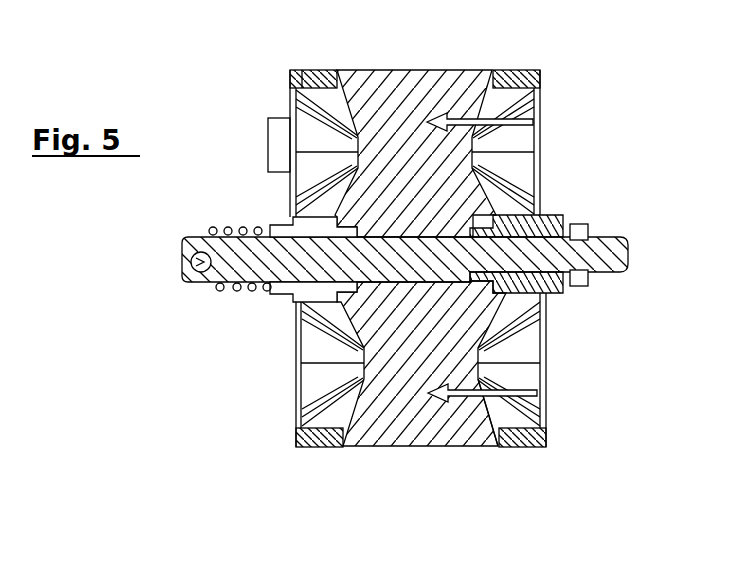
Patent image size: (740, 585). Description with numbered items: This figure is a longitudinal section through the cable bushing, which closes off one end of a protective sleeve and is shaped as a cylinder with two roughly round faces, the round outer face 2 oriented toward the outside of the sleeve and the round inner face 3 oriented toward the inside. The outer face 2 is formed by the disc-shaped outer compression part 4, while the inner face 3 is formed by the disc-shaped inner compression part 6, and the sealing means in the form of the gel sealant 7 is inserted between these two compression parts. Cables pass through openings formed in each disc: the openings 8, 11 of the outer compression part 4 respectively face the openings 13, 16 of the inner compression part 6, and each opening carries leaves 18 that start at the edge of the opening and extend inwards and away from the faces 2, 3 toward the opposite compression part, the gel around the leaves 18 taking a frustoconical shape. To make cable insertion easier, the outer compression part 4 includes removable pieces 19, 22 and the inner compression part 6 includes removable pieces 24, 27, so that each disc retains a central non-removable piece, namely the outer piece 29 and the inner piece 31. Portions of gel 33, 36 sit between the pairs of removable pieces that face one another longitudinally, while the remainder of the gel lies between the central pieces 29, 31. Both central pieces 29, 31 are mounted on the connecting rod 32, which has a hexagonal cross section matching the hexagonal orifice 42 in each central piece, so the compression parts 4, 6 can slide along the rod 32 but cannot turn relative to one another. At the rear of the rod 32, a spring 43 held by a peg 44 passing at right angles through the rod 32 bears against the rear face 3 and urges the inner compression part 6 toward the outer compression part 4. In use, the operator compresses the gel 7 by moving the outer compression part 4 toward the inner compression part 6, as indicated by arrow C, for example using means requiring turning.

The round outer face 2 is at (547, 415).
The round inner face 3 is at (300, 425).
The outer compression part 4 is at (514, 78).
The inner compression part 6 is at (302, 78).
The gel sealant 7 is at (410, 350).
The opening 8 is at (505, 352).
The opening 11 is at (523, 142).
The opening 13 is at (312, 380).
The opening 16 is at (287, 143).
The leaves 18 is at (312, 344).
The removable piece 19 is at (520, 442).
The removable piece 22 is at (540, 72).
The removable piece 24 is at (303, 440).
The removable piece 27 is at (325, 80).
The central non-removable outer piece 29 is at (528, 205).
The non-removable central piece 31 is at (290, 218).
The connecting rod 32 is at (610, 236).
The portion of gel 33 is at (458, 405).
The portion of gel 36 is at (465, 82).
The hexagonal orifice 42 is at (553, 295).
The spring 43 is at (224, 296).
The peg 44 is at (183, 258).
The arrow C is at (452, 118).